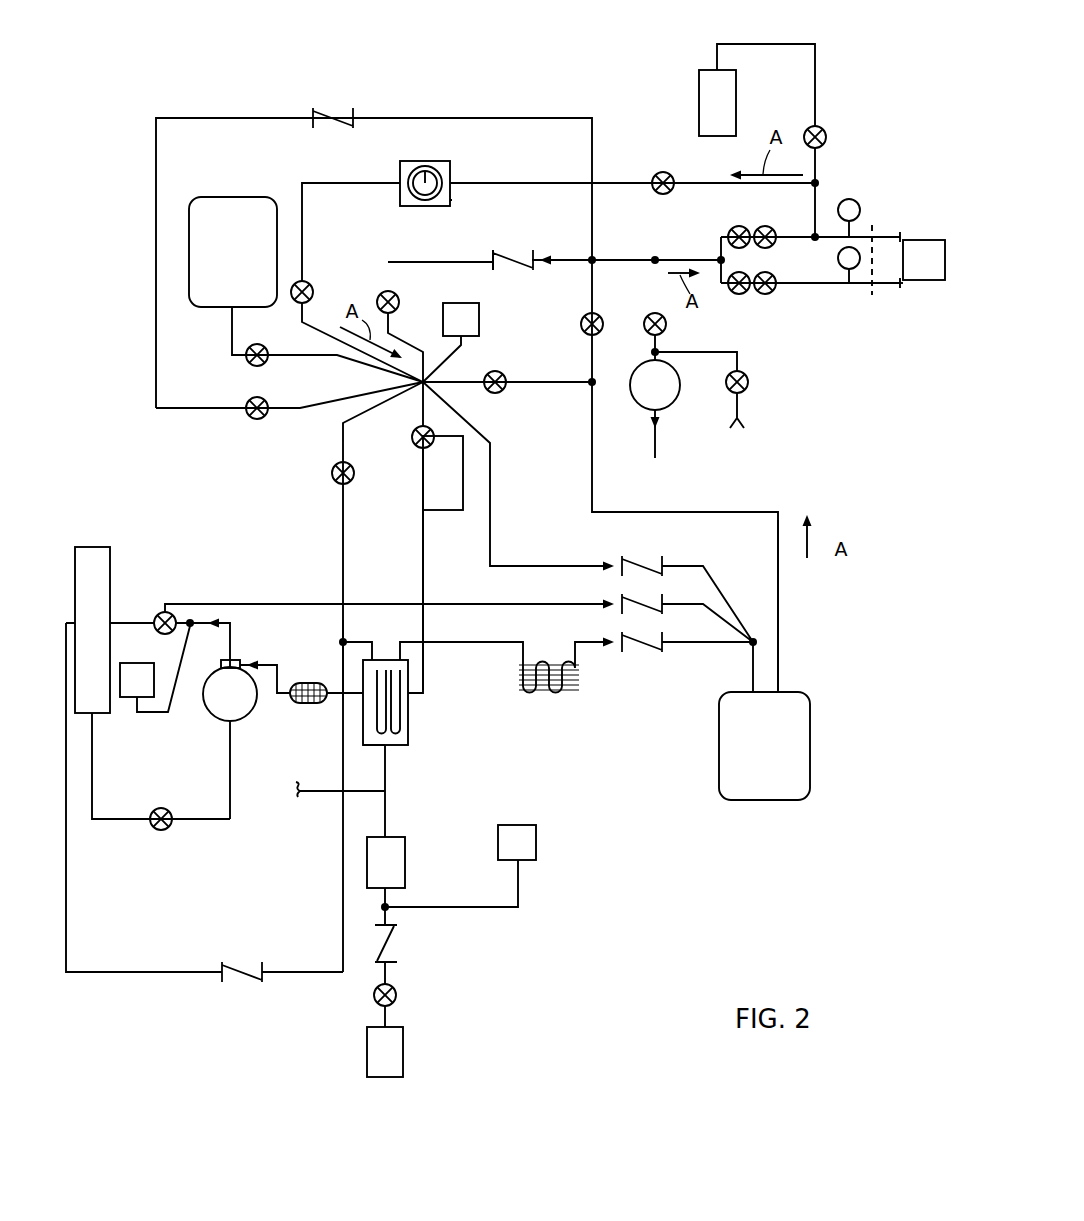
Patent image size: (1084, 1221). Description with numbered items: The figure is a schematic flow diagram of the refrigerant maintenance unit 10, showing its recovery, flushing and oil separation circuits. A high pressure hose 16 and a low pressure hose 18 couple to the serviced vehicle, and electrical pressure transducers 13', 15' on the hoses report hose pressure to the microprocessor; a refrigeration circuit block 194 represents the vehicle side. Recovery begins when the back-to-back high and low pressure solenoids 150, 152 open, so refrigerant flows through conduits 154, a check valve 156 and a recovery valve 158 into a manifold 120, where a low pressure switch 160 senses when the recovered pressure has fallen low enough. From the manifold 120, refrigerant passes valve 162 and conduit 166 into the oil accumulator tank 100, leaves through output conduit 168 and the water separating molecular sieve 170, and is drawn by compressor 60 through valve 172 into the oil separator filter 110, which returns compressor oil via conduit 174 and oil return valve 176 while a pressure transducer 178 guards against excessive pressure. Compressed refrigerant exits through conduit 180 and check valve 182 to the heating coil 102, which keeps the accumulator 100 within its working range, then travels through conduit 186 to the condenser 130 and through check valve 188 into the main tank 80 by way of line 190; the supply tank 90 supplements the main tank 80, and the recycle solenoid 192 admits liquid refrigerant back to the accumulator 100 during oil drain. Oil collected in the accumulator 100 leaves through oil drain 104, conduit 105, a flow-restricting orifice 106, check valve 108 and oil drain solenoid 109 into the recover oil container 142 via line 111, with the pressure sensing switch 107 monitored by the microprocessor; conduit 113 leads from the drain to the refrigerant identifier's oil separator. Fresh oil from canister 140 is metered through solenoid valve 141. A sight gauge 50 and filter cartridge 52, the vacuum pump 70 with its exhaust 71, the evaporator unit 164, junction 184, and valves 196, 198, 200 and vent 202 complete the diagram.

The refrigeration servicing unit 10 is at (519, 60).
The electrical pressure transducer 13' is at (867, 200).
The electrical pressure transducer 15' is at (833, 284).
The high pressure hose 16 is at (897, 235).
The low pressure hose 18 is at (887, 288).
The sight gauge 50 is at (427, 182).
The filter cartridge 52 is at (451, 200).
The compressor 60 is at (250, 717).
The vacuum pump 70 is at (674, 404).
The vacuum pump exhaust 71 is at (657, 450).
The main tank 80 is at (748, 802).
The supply tank 90 is at (233, 197).
The oil accumulator tank 100 is at (410, 731).
The heating coil 102 is at (388, 745).
The oil drain 104 is at (365, 745).
The conduit 105 is at (386, 792).
The orifice 106 is at (405, 858).
The pressure sensing switch 107 is at (537, 840).
The check valve 108 is at (398, 945).
The oil drain solenoid 109 is at (397, 995).
The oil separator filter 110 is at (98, 547).
The oil drain line 111 is at (385, 1016).
The conduit 113 is at (332, 792).
The manifold 120 is at (430, 380).
The condenser 130 is at (545, 696).
The fresh oil canister 140 is at (699, 85).
The solenoid valve 141 is at (826, 132).
The recover oil container 142 is at (404, 1050).
The high pressure solenoid 150 is at (743, 227).
The low pressure solenoid 152 is at (746, 295).
The conduits 154 is at (620, 258).
The check valve 156 is at (510, 255).
The recovery valve 158 is at (400, 302).
The low pressure switch 160 is at (480, 318).
The valve 162 is at (412, 437).
The expansion valve 164 is at (464, 476).
The conduit 166 is at (426, 565).
The output conduit 168 is at (343, 713).
The water separating molecular sieve 170 is at (308, 683).
The valve 172 is at (160, 615).
The conduit 174 is at (94, 758).
The oil return valve 176 is at (163, 830).
The pressure transducer 178 is at (128, 663).
The conduit 180 is at (67, 840).
The check valve 182 is at (242, 968).
The junction 184 is at (350, 642).
The conduit 186 is at (455, 643).
The check valve 188 is at (640, 653).
The line 190 is at (780, 613).
The recycle solenoid 192 is at (581, 322).
The refrigeration circuit 194 is at (940, 282).
The valve 196 is at (665, 172).
The valve 198 is at (314, 292).
The valve 200 is at (645, 322).
The vent valve 202 is at (750, 382).